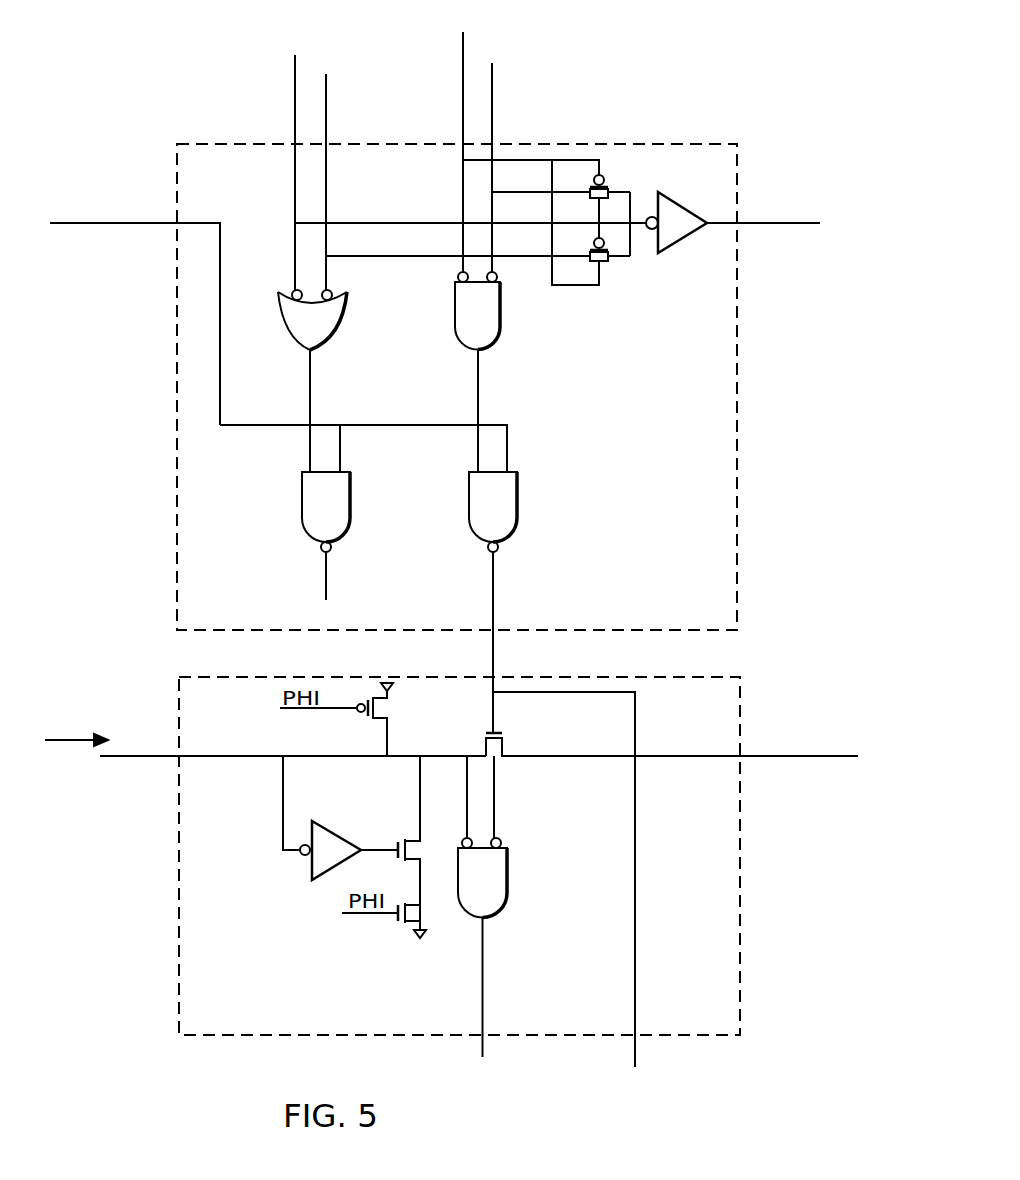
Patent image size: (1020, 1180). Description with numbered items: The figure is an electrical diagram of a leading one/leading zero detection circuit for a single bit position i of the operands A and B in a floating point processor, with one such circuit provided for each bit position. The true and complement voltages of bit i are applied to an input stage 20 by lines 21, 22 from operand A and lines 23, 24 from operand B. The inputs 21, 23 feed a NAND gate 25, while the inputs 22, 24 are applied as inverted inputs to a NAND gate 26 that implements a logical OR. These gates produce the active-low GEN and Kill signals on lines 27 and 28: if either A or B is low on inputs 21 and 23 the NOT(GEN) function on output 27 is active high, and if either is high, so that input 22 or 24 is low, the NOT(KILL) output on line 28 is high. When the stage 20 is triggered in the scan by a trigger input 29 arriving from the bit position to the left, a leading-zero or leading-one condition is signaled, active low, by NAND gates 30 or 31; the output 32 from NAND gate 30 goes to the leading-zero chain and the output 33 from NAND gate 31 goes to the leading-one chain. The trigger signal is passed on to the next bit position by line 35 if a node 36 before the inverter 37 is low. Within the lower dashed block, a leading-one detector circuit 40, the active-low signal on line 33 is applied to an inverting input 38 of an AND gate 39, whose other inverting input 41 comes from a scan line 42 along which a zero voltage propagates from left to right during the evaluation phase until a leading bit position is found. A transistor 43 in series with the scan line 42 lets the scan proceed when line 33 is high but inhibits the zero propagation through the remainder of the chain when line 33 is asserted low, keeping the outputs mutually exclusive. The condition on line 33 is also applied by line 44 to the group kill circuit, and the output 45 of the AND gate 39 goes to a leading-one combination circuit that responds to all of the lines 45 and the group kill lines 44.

The input stage 20 is at (208, 142).
The line 21 is at (294, 117).
The line 22 is at (461, 117).
The line 23 is at (327, 117).
The line 24 is at (493, 117).
The NAND gate 25 is at (337, 322).
The NAND gate 26 is at (503, 322).
The line 27 is at (308, 383).
The line 28 is at (475, 373).
The trigger input 29 is at (125, 226).
The NAND gate 30 is at (352, 512).
The NAND gate 31 is at (519, 512).
The output 32 is at (325, 585).
The output 33 is at (496, 587).
The line 35 is at (754, 226).
The node 36 is at (641, 228).
The inverter 37 is at (679, 207).
The inverting input 38 is at (497, 812).
The AND gate 39 is at (509, 884).
The leading-1 detector circuit 40 is at (197, 676).
The inverting input 41 is at (467, 780).
The scan line 42 is at (241, 760).
The transistor 43 is at (505, 748).
The line 44 is at (638, 922).
The output 45 is at (481, 1009).